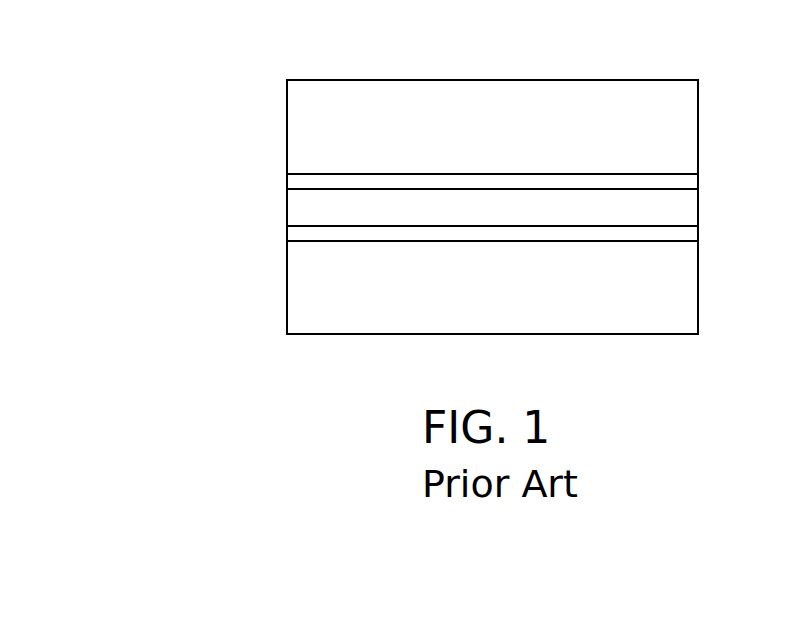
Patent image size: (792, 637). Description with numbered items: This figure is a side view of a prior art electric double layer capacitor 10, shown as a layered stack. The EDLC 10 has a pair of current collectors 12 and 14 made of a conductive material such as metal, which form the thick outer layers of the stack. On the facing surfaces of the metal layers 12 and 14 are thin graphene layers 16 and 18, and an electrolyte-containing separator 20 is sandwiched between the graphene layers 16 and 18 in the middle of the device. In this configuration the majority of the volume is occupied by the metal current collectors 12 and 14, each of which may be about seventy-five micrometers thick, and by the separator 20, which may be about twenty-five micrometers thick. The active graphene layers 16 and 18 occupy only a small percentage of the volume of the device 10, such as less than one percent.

The electric double layer capacitor 10 is at (218, 107).
The current collector 12 is at (287, 133).
The current collector 14 is at (286, 279).
The graphene layer 16 is at (692, 183).
The graphene layer 18 is at (693, 234).
The electrolyte-containing separator 20 is at (682, 205).